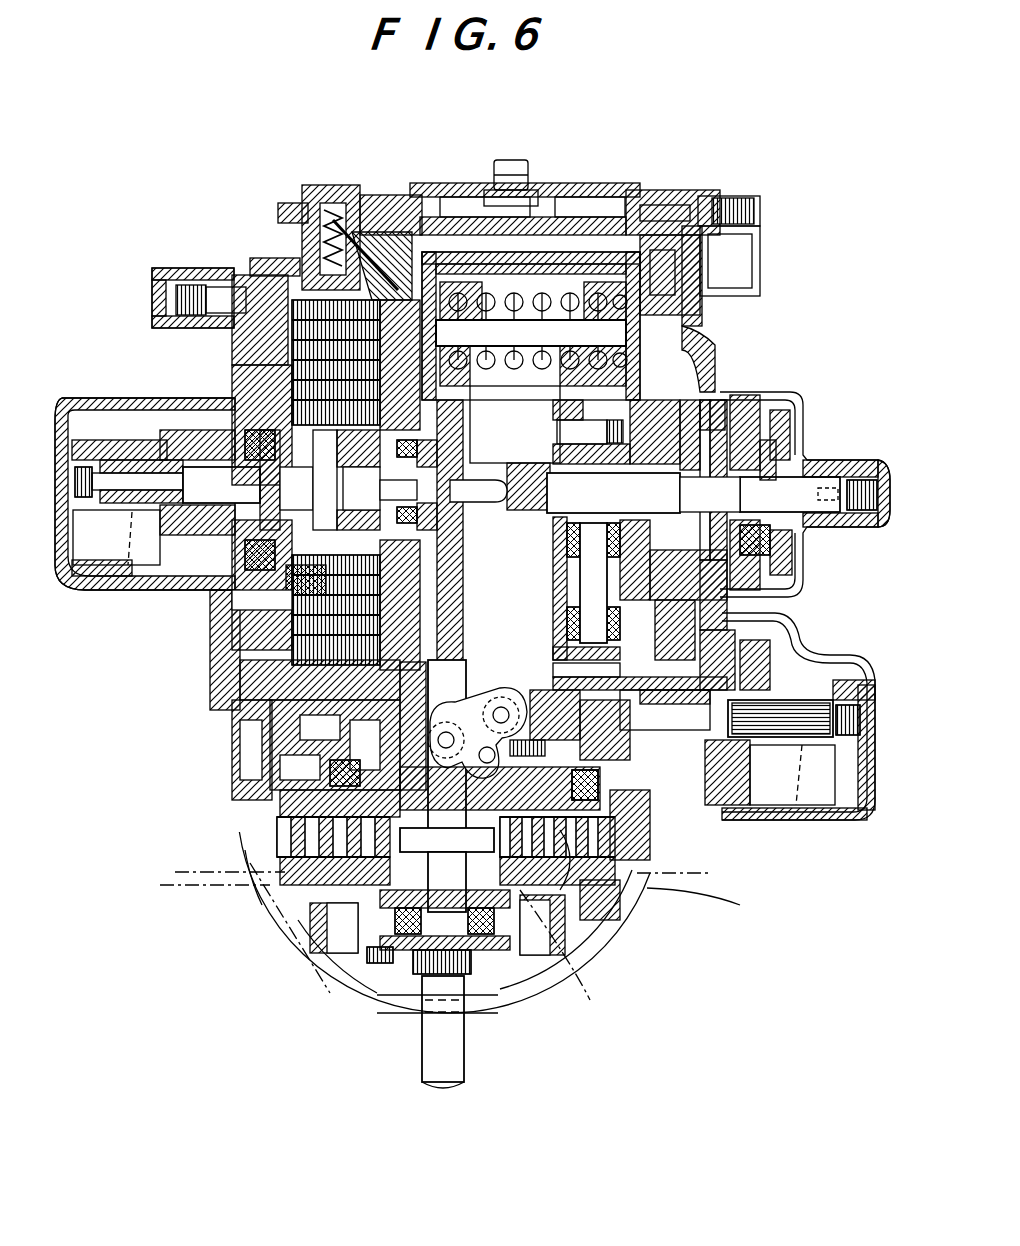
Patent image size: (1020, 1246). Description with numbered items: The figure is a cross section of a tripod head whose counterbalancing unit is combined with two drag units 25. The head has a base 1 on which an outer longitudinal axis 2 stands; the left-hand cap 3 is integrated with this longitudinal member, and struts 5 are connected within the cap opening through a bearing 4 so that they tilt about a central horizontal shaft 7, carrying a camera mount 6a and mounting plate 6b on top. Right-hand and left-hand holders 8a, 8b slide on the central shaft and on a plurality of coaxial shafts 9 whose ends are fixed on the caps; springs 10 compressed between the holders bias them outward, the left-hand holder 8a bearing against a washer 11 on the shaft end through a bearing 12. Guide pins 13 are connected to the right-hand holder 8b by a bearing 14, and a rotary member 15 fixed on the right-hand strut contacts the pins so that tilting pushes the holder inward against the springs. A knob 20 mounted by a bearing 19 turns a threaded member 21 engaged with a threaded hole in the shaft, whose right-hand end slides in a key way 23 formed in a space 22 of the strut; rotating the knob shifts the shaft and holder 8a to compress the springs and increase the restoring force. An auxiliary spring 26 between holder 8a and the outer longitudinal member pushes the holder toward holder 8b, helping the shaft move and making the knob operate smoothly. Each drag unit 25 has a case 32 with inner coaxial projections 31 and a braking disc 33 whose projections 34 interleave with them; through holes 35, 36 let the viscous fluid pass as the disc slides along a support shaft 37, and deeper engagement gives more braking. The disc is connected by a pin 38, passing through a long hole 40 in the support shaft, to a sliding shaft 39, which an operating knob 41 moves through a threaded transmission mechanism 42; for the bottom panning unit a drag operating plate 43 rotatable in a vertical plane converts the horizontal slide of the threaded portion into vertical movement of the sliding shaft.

The base 1 is at (268, 935).
The longitudinal axis 2 is at (600, 262).
The cap 3 is at (700, 268).
The bearing 4 is at (290, 290).
The struts 5 is at (700, 292).
The camera mount 6a is at (465, 320).
The mounting plate 6b is at (538, 215).
The central horizontal shaft 7 is at (500, 470).
The left-hand holder 8a is at (458, 300).
The right-hand holder 8b is at (690, 355).
The coaxial shafts 9 is at (722, 308).
The springs 10 is at (622, 320).
The washer 11 is at (350, 270).
The bearing 12 is at (372, 217).
The guide pins 13 is at (590, 628).
The bearing 14 is at (567, 540).
The rotary member 15 is at (720, 592).
The bearing 19 is at (735, 394).
The knob 20 is at (866, 472).
The threaded member 21 is at (740, 515).
The space 22 is at (740, 548).
The key way 23 is at (770, 455).
The drag unit 25 is at (240, 305).
The auxiliary spring 26 is at (240, 765).
The projections 31 is at (618, 875).
The case 32 is at (280, 622).
The braking disc 33 is at (246, 852).
The projections 34 is at (235, 400).
The through holes 35 is at (567, 877).
The through holes 36 is at (592, 853).
The support shaft 37 is at (362, 950).
The pin 38 is at (522, 852).
The sliding shaft 39 is at (478, 880).
The long hole 40 is at (432, 990).
The operating knob 41 is at (58, 440).
The transmission mechanism 42 is at (178, 412).
The drag operating plate 43 is at (497, 690).